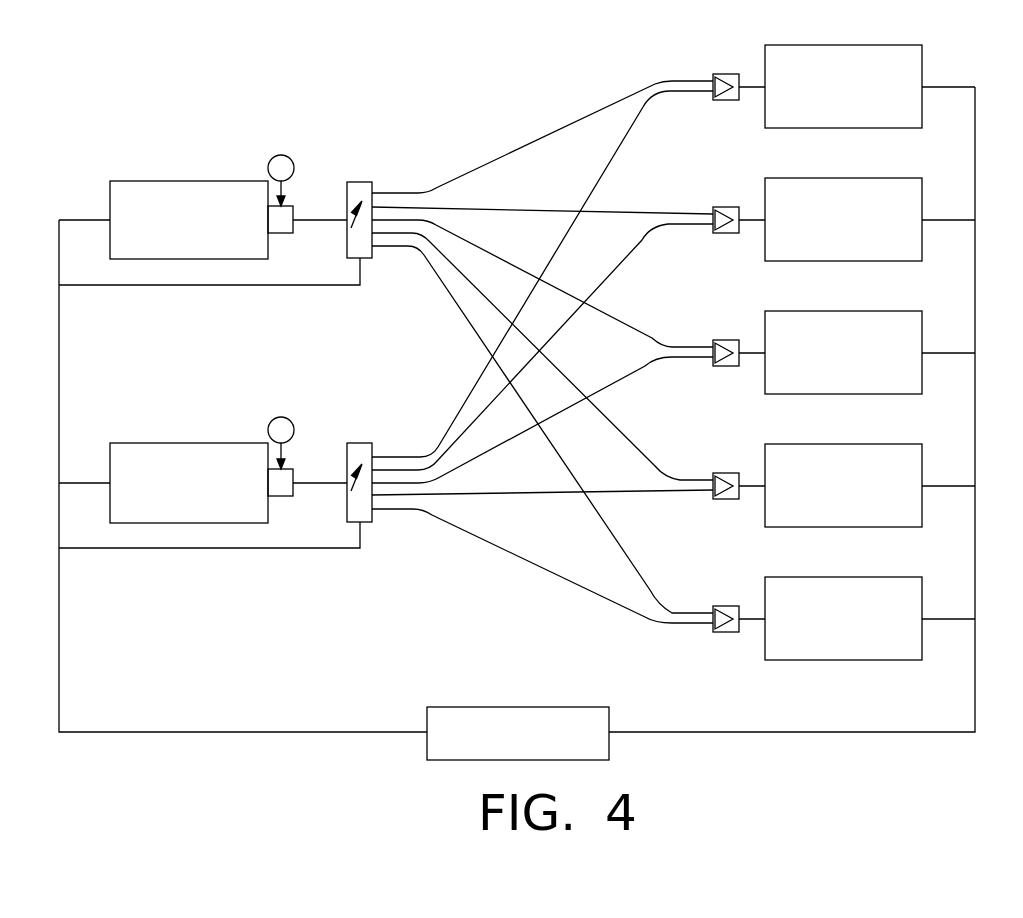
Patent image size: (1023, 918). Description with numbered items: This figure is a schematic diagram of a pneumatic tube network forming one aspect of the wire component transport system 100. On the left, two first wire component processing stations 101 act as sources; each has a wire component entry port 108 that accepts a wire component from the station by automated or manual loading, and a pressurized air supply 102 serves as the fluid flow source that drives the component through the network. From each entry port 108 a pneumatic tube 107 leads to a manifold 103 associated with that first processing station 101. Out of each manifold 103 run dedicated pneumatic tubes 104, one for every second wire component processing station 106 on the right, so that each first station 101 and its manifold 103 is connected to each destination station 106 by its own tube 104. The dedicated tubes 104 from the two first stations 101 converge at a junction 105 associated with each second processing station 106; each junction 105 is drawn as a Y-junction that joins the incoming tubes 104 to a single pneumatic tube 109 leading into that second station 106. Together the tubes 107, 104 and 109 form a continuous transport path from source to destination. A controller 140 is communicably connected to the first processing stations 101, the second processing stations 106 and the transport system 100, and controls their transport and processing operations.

The wire component transport system 100 is at (160, 78).
The first wire component processing station 101 is at (171, 181).
The pressurized air supply 102 is at (276, 155).
The manifold 103 is at (363, 182).
The pneumatic tube 104 is at (563, 127).
The junction 105 is at (724, 101).
The second wire component processing station 106 is at (853, 45).
The pneumatic tube 107 is at (317, 221).
The wire component entry port 108 is at (282, 234).
The pneumatic tube 109 is at (755, 88).
The controller 140 is at (497, 707).